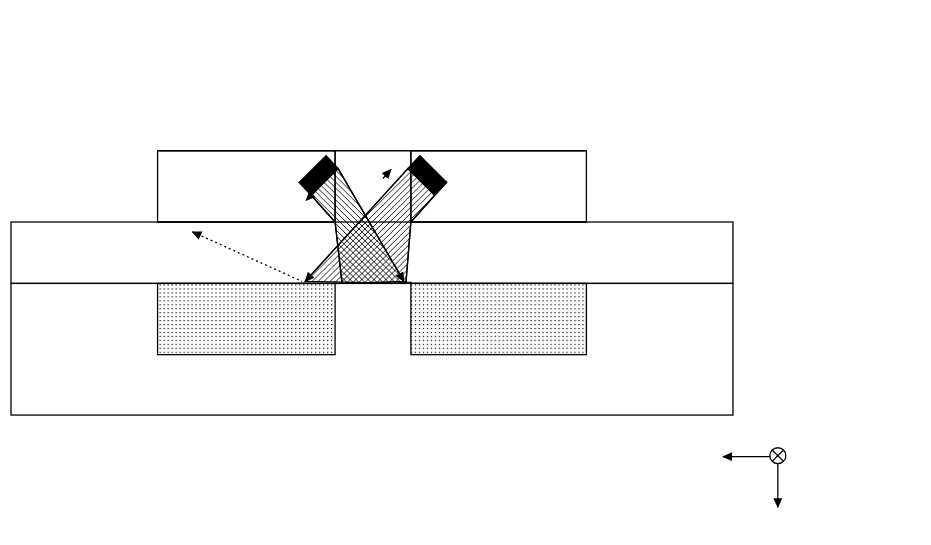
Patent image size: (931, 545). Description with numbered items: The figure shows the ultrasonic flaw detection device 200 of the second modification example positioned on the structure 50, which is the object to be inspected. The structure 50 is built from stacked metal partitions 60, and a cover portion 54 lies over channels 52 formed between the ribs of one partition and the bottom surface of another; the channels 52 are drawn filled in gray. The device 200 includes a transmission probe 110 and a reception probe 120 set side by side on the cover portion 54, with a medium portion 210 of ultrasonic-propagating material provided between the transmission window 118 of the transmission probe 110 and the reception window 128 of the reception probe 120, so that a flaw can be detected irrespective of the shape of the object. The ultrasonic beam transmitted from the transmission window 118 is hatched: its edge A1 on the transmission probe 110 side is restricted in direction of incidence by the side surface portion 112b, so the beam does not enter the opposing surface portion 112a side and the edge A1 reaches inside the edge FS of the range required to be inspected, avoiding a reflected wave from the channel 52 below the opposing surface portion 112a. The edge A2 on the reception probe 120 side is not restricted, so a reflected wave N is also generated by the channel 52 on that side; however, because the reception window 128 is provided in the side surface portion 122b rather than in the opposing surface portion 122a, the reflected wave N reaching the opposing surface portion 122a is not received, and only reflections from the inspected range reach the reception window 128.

The ultrasonic flaw detection device 200 is at (110, 104).
The structure 50 is at (809, 215).
The channel 52 is at (259, 326).
The cover portion 54 is at (733, 240).
The partition 60 is at (733, 345).
The transmission probe 110 is at (545, 157).
The opposing surface portion 112a is at (578, 222).
The side surface portion 112b is at (405, 148).
The transmission window 118 is at (398, 158).
The reception probe 120 is at (190, 157).
The opposing surface portion 122a is at (175, 222).
The side surface portion 122b is at (334, 147).
The reception window 128 is at (348, 160).
The medium portion 210 is at (378, 146).
The edge of the ultrasonic beam on the transmission probe side A1 is at (410, 233).
The edge of the ultrasonic beam on the reception probe side A2 is at (332, 246).
The edge of the range required to be inspected FS is at (412, 276).
The reflected wave N is at (225, 245).